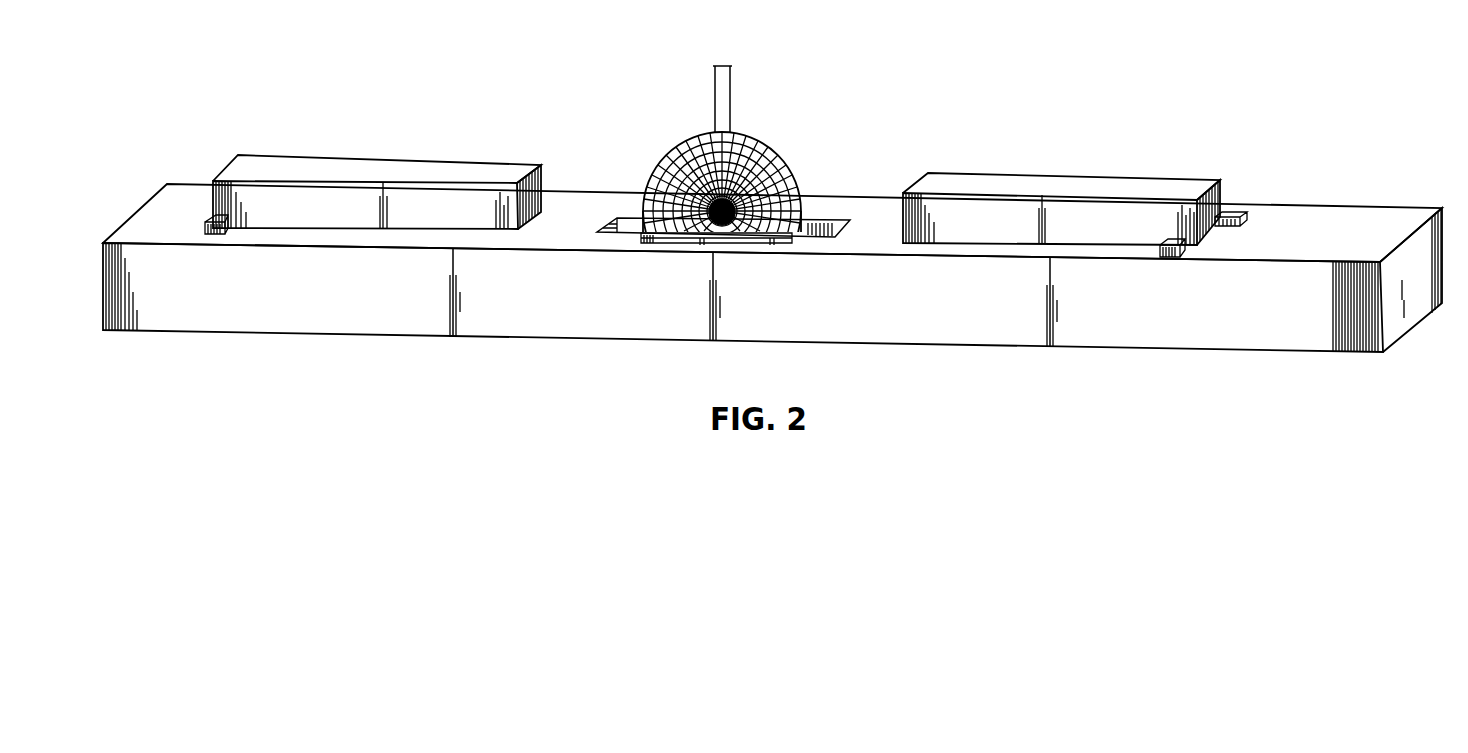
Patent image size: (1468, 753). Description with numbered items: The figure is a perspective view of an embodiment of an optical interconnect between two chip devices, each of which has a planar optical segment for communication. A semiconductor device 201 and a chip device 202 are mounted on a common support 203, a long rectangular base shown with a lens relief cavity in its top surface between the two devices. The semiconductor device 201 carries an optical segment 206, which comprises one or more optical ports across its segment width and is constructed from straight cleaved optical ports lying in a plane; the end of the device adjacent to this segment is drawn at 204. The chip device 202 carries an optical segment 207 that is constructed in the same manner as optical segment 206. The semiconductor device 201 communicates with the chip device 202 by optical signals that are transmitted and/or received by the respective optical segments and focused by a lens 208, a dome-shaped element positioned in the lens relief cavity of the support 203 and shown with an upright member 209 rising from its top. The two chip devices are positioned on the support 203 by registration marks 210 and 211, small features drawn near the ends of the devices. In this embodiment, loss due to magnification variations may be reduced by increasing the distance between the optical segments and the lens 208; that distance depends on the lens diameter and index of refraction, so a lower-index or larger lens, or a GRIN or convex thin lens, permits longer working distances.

The semiconductor device 201 is at (413, 168).
The chip device 202 is at (1125, 175).
The support 203 is at (532, 338).
The end face of first module 204 is at (547, 163).
The optical segment 206 is at (556, 196).
The optical segment 207 is at (908, 190).
The lens 208 is at (790, 168).
The post 209 is at (730, 83).
The registration mark 210 is at (1240, 213).
The registration mark 211 is at (205, 228).